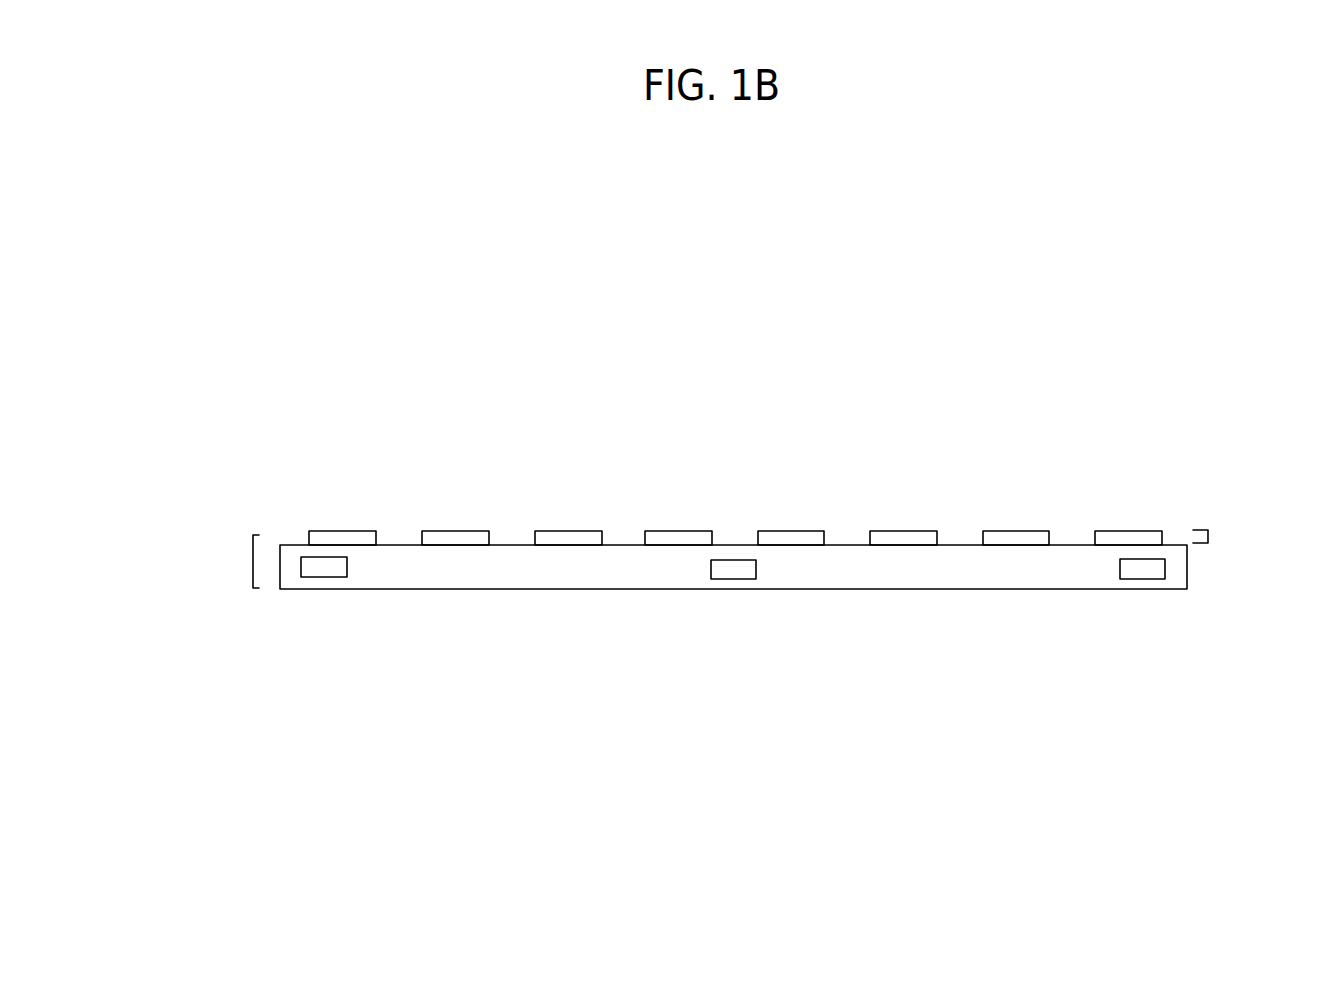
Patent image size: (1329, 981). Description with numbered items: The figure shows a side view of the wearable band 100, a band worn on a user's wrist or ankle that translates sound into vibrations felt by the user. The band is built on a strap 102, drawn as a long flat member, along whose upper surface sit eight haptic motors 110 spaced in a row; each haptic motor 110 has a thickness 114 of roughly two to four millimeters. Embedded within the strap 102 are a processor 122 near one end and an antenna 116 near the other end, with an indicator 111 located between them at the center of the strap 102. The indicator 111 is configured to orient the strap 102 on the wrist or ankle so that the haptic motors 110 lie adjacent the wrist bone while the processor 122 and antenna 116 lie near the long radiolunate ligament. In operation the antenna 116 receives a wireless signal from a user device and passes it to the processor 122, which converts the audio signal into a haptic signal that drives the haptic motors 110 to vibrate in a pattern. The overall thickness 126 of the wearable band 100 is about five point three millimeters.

The wearable band 100 is at (567, 314).
The strap 102 is at (734, 545).
The haptic motors 110 is at (455, 531).
The indicator 111 is at (733, 579).
The thickness 114 is at (1208, 537).
The antenna 116 is at (1143, 579).
The processor 122 is at (325, 577).
The thickness 126 is at (253, 563).